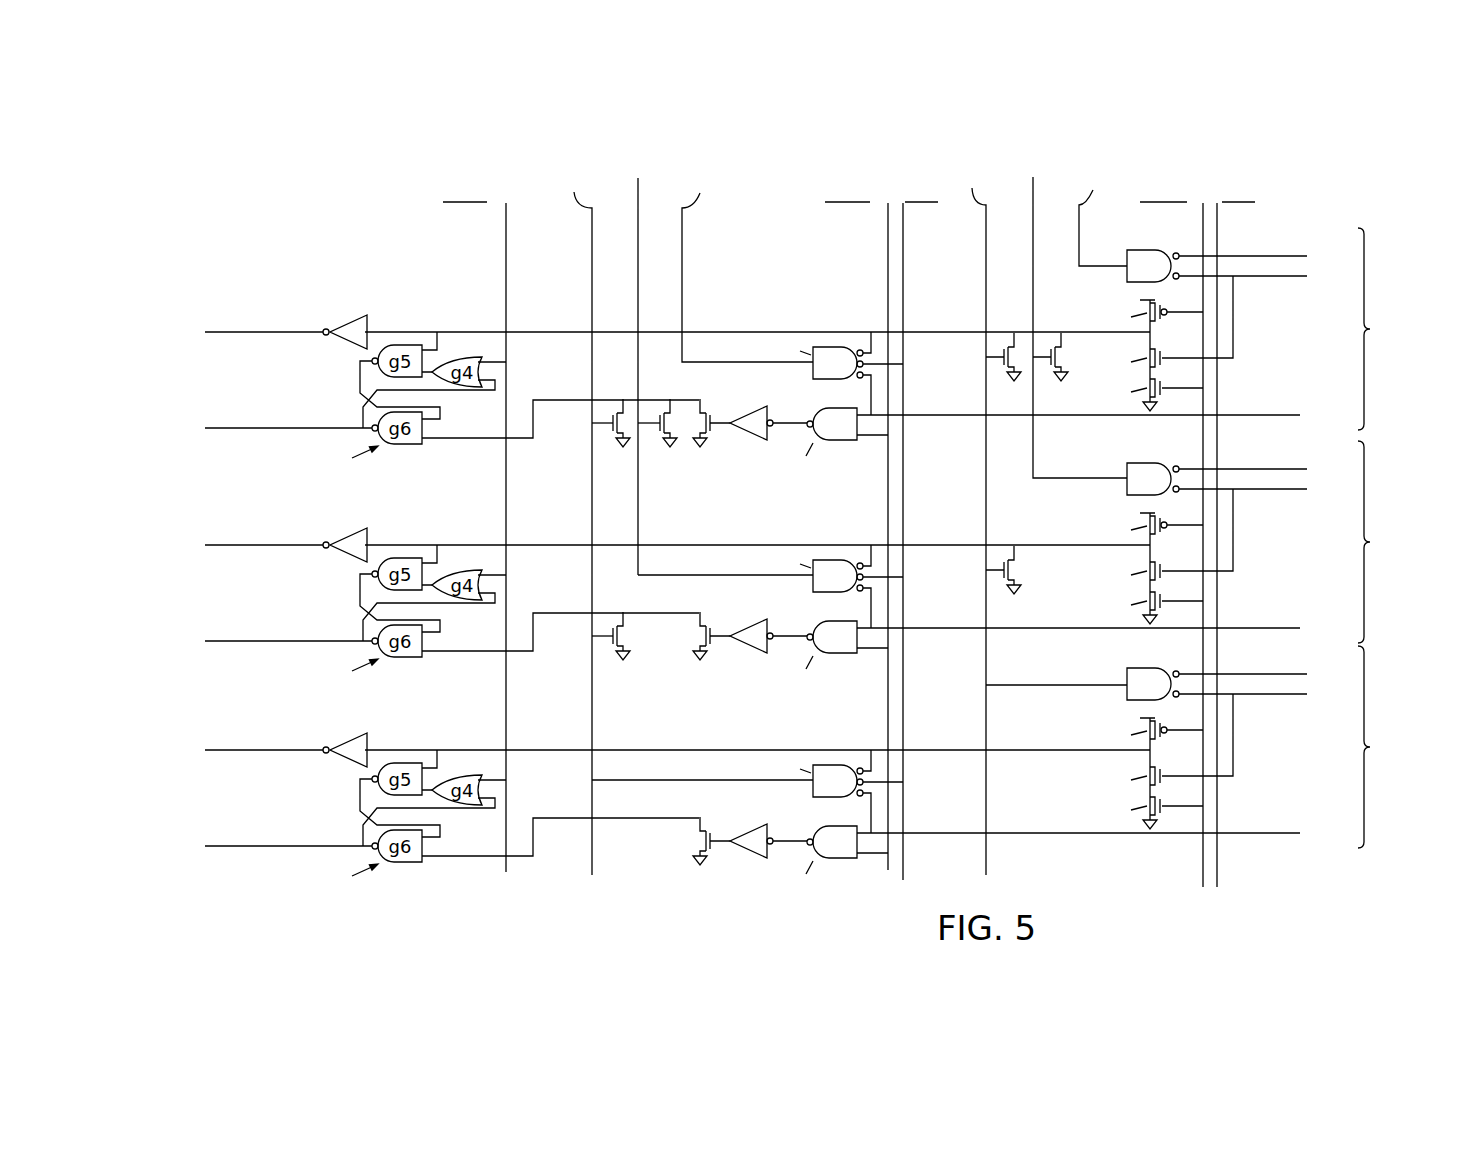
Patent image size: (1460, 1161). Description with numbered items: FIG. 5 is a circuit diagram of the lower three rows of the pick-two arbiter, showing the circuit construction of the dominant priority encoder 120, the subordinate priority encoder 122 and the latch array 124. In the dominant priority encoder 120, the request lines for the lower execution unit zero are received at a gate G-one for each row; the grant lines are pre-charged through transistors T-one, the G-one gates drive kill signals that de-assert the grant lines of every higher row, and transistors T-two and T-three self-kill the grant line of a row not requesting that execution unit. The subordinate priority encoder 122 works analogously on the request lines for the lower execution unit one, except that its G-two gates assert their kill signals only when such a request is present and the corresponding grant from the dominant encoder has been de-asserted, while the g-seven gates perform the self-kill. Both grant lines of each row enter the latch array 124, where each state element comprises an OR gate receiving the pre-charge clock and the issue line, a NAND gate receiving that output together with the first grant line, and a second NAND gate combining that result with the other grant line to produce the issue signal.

The priority encoder 0 120 is at (1272, 193).
The priority encoder 1 122 is at (793, 203).
The latch array 124 is at (292, 228).